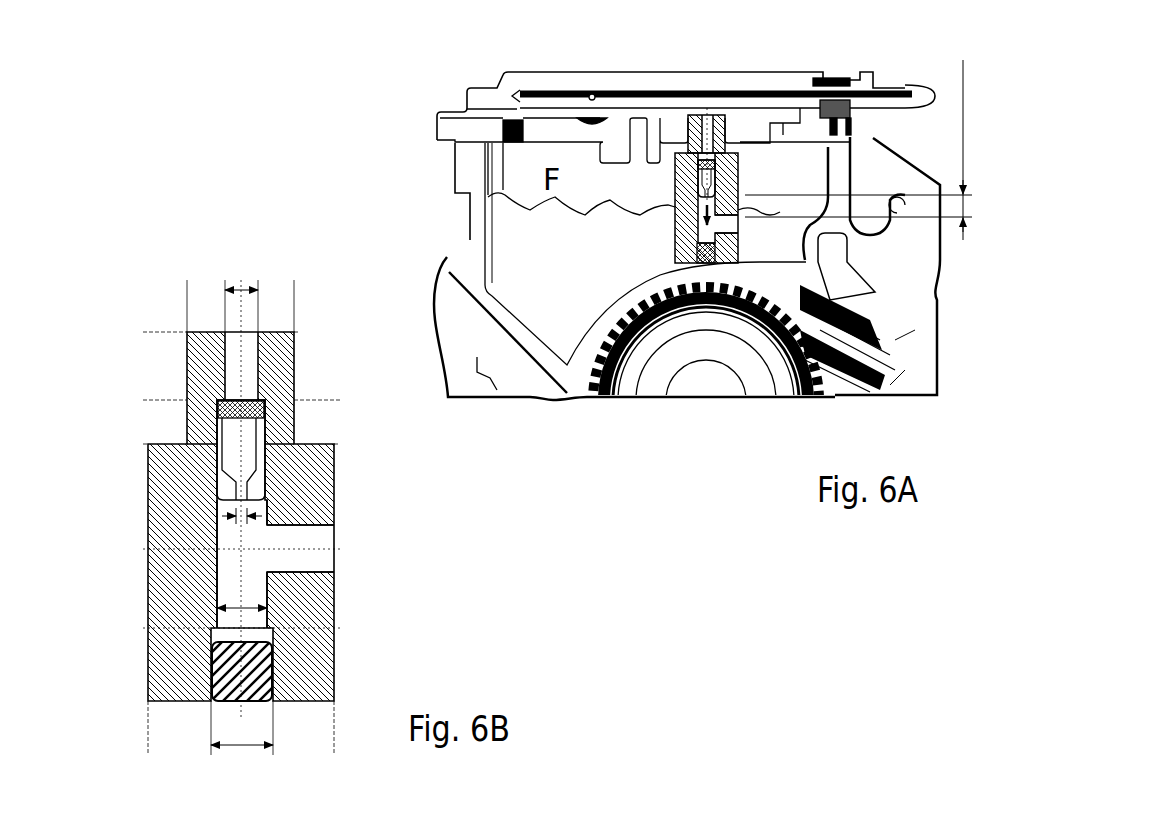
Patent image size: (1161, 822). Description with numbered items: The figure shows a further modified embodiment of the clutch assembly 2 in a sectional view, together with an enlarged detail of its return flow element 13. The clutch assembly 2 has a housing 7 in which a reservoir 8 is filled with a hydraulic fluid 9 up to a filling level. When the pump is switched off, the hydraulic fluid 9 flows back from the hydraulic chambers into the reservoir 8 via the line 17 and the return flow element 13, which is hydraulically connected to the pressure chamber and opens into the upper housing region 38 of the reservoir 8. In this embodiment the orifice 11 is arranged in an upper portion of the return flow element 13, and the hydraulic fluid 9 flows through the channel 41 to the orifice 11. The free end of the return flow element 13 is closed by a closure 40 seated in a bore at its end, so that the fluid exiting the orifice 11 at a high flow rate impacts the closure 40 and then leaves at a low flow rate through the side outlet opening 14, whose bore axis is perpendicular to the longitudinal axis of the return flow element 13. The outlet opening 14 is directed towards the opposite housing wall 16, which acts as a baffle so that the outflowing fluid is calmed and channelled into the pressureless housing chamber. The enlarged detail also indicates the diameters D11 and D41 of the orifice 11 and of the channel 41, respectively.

In FIG. 6A, the clutch assembly 2 is at (426, 104).
In FIG. 6A, the housing 7 is at (842, 176).
In FIG. 6A, the reservoir 8 is at (590, 168).
In FIG. 6A, the hydraulic fluid 9 is at (558, 323).
In FIG. 6A, the orifice 11 is at (705, 172).
In FIG. 6B, the orifice 11 is at (218, 460).
In FIG. 6A, the return flow element 13 is at (738, 190).
In FIG. 6B, the return flow element 13 is at (146, 480).
In FIG. 6A, the outlet opening 14 is at (722, 230).
In FIG. 6B, the outlet opening 14 is at (336, 540).
In FIG. 6A, the housing wall 16 is at (707, 273).
In FIG. 6A, the line 17 is at (630, 100).
In FIG. 6A, the housing region 38 is at (522, 242).
In FIG. 6B, the closure 40 is at (215, 665).
In FIG. 6B, the channel 41 is at (220, 584).
In FIG. 6B, the nozzle diameter D11 is at (230, 517).
In FIG. 6B, the bore diameter D41 is at (247, 606).